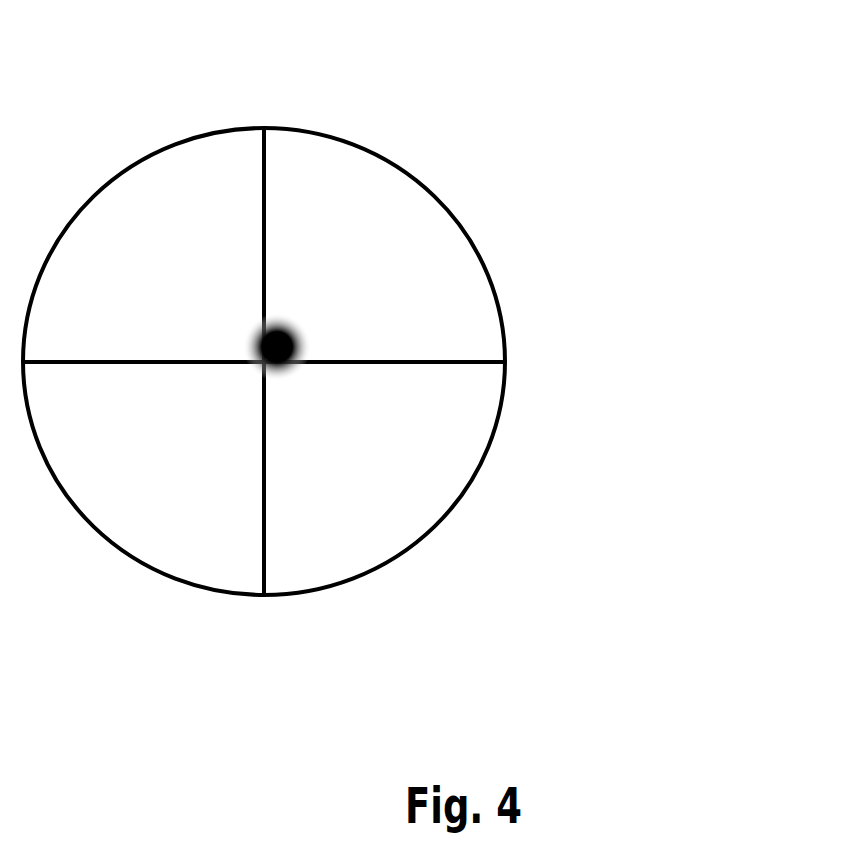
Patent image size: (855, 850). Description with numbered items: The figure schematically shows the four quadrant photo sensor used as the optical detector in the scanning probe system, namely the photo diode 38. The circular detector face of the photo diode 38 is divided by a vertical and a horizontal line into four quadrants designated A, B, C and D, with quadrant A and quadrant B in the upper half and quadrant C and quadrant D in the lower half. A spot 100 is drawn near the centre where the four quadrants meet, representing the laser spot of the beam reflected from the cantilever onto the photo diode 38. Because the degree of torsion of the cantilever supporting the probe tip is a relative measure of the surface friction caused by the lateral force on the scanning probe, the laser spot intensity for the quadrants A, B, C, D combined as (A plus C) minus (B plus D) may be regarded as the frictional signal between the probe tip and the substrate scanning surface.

The optical detector 38 is at (378, 148).
The center point / cursor position 100 is at (295, 332).
The quadrant A is at (150, 266).
The quadrant B is at (390, 266).
The quadrant C is at (150, 467).
The quadrant D is at (391, 467).